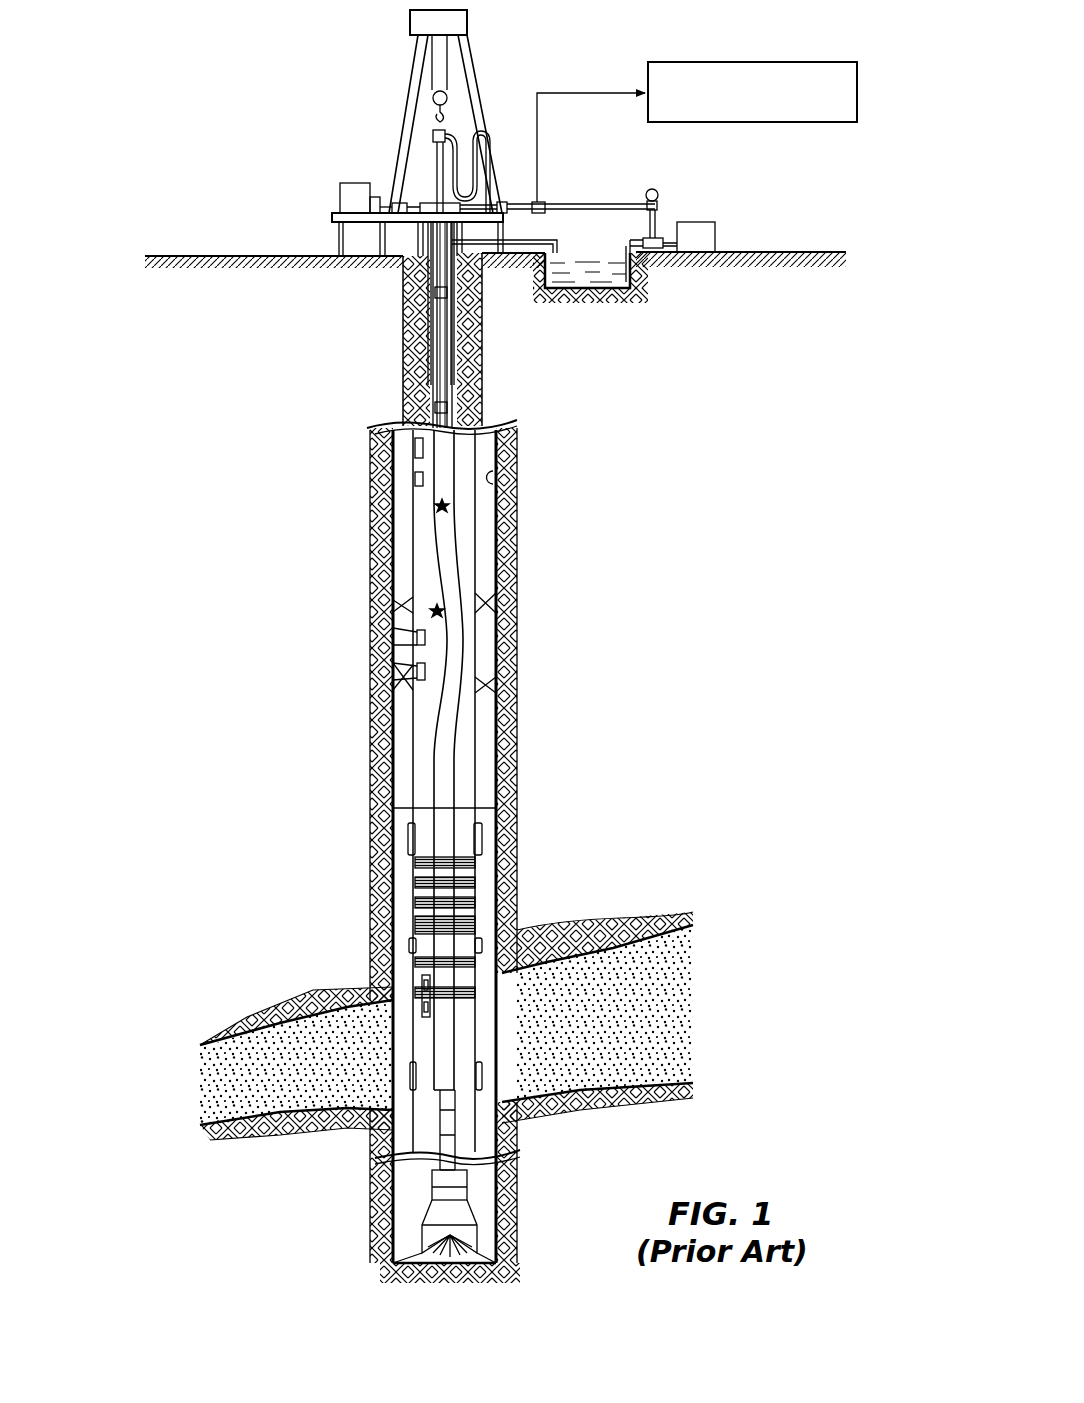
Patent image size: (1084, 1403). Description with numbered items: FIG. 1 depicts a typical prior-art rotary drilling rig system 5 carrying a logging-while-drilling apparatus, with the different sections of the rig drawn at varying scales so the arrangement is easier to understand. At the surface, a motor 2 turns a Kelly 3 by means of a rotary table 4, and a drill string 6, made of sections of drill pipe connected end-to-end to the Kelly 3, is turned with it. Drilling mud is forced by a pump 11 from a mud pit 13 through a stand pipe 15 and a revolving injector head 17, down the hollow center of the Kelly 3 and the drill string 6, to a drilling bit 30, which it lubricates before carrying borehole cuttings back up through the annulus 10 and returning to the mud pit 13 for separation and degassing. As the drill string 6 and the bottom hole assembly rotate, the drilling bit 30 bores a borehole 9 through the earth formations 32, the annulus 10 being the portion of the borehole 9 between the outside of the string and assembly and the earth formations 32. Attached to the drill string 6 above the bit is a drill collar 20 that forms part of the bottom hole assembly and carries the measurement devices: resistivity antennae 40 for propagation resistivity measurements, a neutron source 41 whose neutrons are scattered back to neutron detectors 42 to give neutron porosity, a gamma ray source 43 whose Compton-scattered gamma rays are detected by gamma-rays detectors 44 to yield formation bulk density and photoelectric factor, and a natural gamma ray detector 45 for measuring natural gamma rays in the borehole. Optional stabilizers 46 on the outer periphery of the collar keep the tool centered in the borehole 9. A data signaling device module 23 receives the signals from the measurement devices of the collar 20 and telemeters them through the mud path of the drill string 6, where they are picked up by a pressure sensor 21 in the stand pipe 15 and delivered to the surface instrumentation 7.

The rotary drilling rig system 5 is at (342, 42).
The motor 2 is at (340, 197).
The Kelly 3 is at (435, 163).
The rotary table 4 is at (432, 203).
The revolving injector head 17 is at (433, 136).
The surface instrumentation 7 is at (808, 62).
The pressure sensor 21 is at (545, 204).
The stand pipe 15 is at (617, 203).
The pump 11 is at (702, 222).
The mud pit 13 is at (577, 256).
The drill string 6 is at (440, 332).
The annulus 10 is at (437, 370).
The borehole 9 is at (493, 478).
The drill collar 20 is at (463, 524).
The neutron detectors 42 is at (415, 478).
The neutron source 41 is at (437, 505).
The gamma ray source 43 is at (437, 610).
The gamma-rays detectors 44 is at (410, 670).
The stabilizers 46 is at (483, 637).
The resistivity antennae 40 is at (415, 882).
The natural gamma ray detector 45 is at (422, 995).
The data signaling device module 23 is at (445, 1110).
The drilling bit 30 is at (420, 1255).
The earth formations 32 is at (590, 1192).